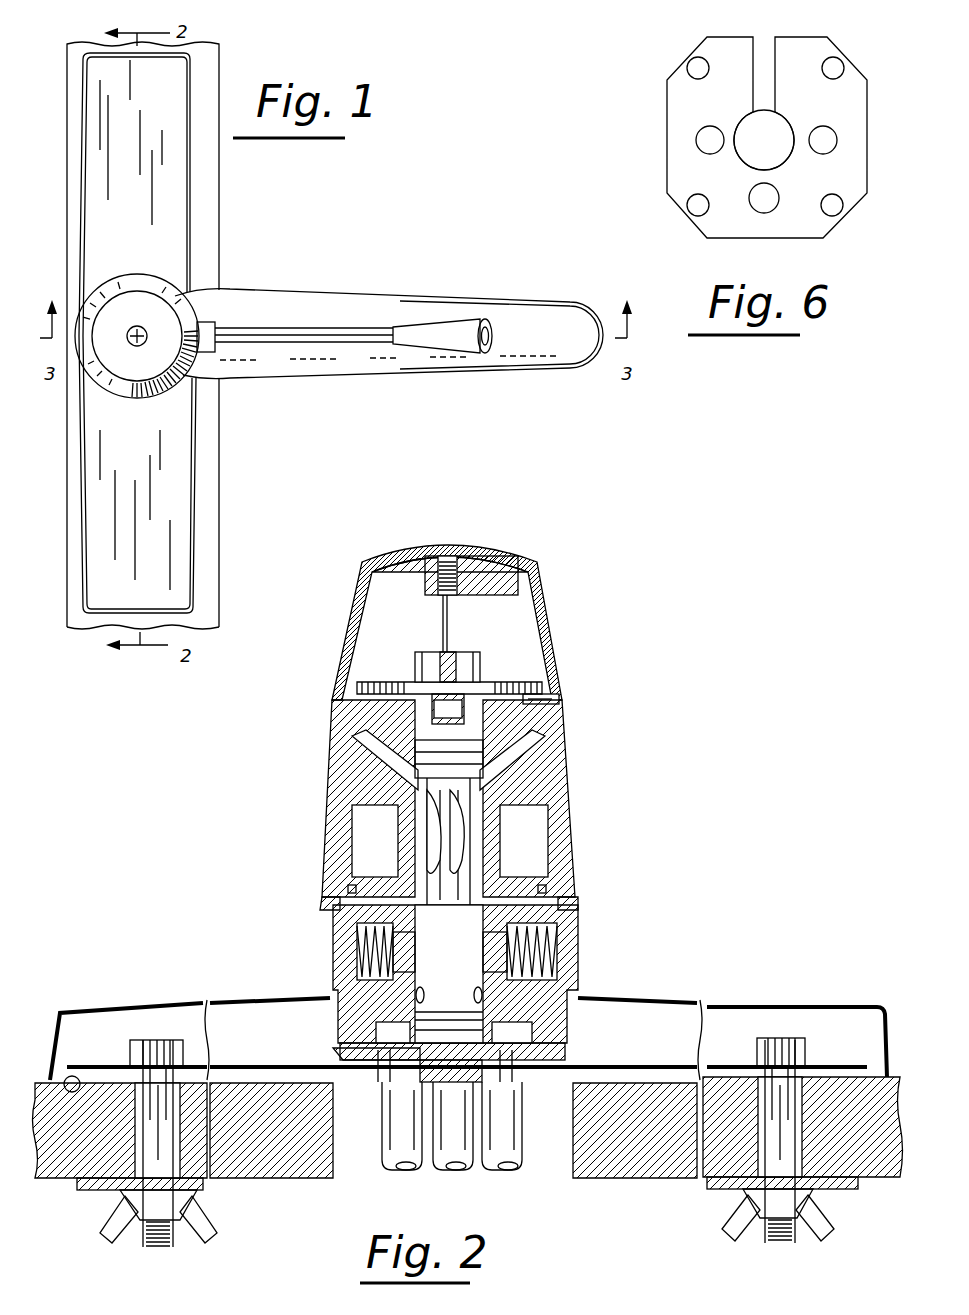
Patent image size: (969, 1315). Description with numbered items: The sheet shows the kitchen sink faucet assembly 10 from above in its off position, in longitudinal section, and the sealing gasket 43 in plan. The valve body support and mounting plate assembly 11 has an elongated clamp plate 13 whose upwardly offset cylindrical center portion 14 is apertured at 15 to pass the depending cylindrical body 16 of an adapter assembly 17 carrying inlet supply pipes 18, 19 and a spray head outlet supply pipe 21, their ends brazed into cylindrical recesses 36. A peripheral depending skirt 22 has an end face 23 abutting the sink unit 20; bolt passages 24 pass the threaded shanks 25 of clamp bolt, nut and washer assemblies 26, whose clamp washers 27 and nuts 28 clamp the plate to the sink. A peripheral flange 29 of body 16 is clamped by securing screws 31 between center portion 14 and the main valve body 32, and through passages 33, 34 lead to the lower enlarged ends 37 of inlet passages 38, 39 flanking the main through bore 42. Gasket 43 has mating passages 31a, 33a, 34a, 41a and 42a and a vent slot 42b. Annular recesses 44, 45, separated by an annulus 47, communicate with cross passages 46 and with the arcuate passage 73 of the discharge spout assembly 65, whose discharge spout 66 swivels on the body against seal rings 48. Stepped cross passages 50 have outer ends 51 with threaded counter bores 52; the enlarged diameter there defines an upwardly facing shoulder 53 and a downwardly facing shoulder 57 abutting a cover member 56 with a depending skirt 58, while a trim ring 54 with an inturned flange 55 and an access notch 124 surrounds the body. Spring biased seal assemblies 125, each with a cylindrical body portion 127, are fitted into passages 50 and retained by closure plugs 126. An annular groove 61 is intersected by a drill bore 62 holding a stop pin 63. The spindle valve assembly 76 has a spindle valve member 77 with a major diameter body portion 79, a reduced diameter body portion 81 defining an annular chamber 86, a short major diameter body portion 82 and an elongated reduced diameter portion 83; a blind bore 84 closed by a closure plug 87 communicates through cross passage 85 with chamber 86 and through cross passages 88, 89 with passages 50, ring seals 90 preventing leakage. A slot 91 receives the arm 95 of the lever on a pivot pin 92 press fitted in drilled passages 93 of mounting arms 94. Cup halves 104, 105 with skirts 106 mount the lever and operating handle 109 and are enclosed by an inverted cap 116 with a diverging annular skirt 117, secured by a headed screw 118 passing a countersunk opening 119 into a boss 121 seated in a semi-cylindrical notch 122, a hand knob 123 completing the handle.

In FIG. 1, the kitchen sink faucet assembly 10 is at (232, 272).
In FIG. 2, the kitchen sink faucet assembly 10 is at (574, 784).
In FIG. 2, the valve body support and mounting plate assembly 11 is at (810, 1044).
In FIG. 2, the clamp plate 13 is at (615, 1076).
In FIG. 2, the upwardly offset cylindrical center portion 14 is at (568, 1050).
In FIG. 2, the aperture 15 is at (499, 1130).
In FIG. 2, the depending cylindrical body 16 is at (610, 1054).
In FIG. 2, the adapter assembly 17 is at (496, 1066).
In FIG. 2, the inlet supply pipe 18 is at (382, 1160).
In FIG. 2, the inlet supply pipe 19 is at (522, 1136).
In FIG. 1, the sink unit 20 is at (218, 543).
In FIG. 2, the sink unit 20 is at (290, 1178).
In FIG. 2, the spray head outlet supply pipe 21 is at (450, 1172).
In FIG. 2, the peripheral depending skirt 22 is at (878, 1066).
In FIG. 2, the end face 23 is at (78, 1076).
In FIG. 2, the bolt passages 24 is at (146, 1092).
In FIG. 2, the threaded shanks 25 is at (469, 1143).
In FIG. 2, the clamp bolt, nut and washer assemblies 26 is at (130, 1048).
In FIG. 2, the clamp washers 27 is at (82, 1192).
In FIG. 2, the nuts 28 is at (206, 1222).
In FIG. 2, the peripheral flange 29 is at (362, 1068).
In FIG. 2, the securing screws 31 is at (380, 1078).
In FIG. 2, the main valve body 32 is at (572, 1018).
In FIG. 2, the through passage 33 is at (453, 1126).
In FIG. 2, the through passage 34 is at (478, 1090).
In FIG. 2, the cylindrical recesses 36 is at (384, 1130).
In FIG. 2, the lower enlarged ends 37 is at (376, 1038).
In FIG. 2, the inlet passage 38 is at (370, 1022).
In FIG. 2, the inlet passage 39 is at (578, 988).
In FIG. 2, the main through bore 42 is at (496, 866).
In FIG. 6, the sealing gasket 43 is at (660, 181).
In FIG. 2, the sealing gasket 43 is at (334, 1068).
In FIG. 2, the annular recess 44 is at (350, 846).
In FIG. 2, the annular recess 45 is at (352, 740).
In FIG. 2, the cross passages 46 is at (386, 753).
In FIG. 2, the annulus 47 is at (350, 800).
In FIG. 2, the seal rings 48 is at (338, 722).
In FIG. 2, the stepped cross passages 50 is at (360, 948).
In FIG. 2, the outer ends 51 is at (360, 980).
In FIG. 2, the threaded counter bores 52 is at (578, 926).
In FIG. 2, the upwardly facing shoulder 53 is at (322, 906).
In FIG. 2, the annular brass trim ring 54 is at (580, 918).
In FIG. 2, the inturned flange 55 is at (568, 900).
In FIG. 1, the cover member 56 is at (212, 213).
In FIG. 2, the cover member 56 is at (712, 1004).
In FIG. 2, the downwardly facing shoulder 57 is at (338, 1000).
In FIG. 2, the depending diverging peripheral skirt 58 is at (884, 1020).
In FIG. 2, the annular groove 61 is at (558, 702).
In FIG. 2, the pin receiving drill bore 62 is at (548, 674).
In FIG. 2, the stop pin 63 is at (562, 696).
In FIG. 1, the discharge spout assembly 65 is at (343, 378).
In FIG. 1, the discharge spout 66 is at (444, 374).
In FIG. 2, the arcuate passage 73 is at (548, 744).
In FIG. 2, the spindle valve assembly 76 is at (464, 862).
In FIG. 2, the spindle valve member 77 is at (440, 650).
In FIG. 2, the major diameter body portion 79 is at (440, 945).
In FIG. 2, the reduced diameter body portion 81 is at (448, 841).
In FIG. 2, the short major diameter body portion 82 is at (550, 738).
In FIG. 2, the elongated reduced diameter portion 83 is at (490, 690).
In FIG. 2, the blind bore 84 is at (470, 824).
In FIG. 2, the cross passage 85 is at (430, 840).
In FIG. 2, the annular chamber 86 is at (480, 842).
In FIG. 2, the closure plug 87 is at (430, 1030).
In FIG. 2, the cross passage 88 is at (422, 990).
In FIG. 2, the cross passage 89 is at (476, 994).
In FIG. 2, the ring seals 90 is at (449, 849).
In FIG. 2, the slot 91 is at (444, 650).
In FIG. 2, the pivot pin 92 is at (448, 650).
In FIG. 2, the drilled passages 93 is at (414, 658).
In FIG. 2, the mounting arms 94 is at (430, 650).
In FIG. 2, the arm 95 is at (464, 650).
In FIG. 2, the cup half 104 is at (546, 608).
In FIG. 2, the cup half 105 is at (348, 629).
In FIG. 2, the skirts 106 is at (342, 658).
In FIG. 1, the operating handle 109 is at (340, 326).
In FIG. 2, the operating handle 109 is at (564, 680).
In FIG. 1, the inverted cap 116 is at (132, 396).
In FIG. 2, the inverted cap 116 is at (508, 551).
In FIG. 1, the diverging annular skirt 117 is at (128, 274).
In FIG. 2, the diverging annular skirt 117 is at (352, 604).
In FIG. 1, the headed screw 118 is at (138, 326).
In FIG. 2, the headed screw 118 is at (452, 550).
In FIG. 2, the countersunk opening 119 is at (444, 550).
In FIG. 2, the depending cylindrical boss 121 is at (434, 556).
In FIG. 2, the semi-cylindrical notch 122 is at (430, 580).
In FIG. 1, the hand knob 123 is at (450, 326).
In FIG. 2, the access notch 124 is at (360, 932).
In FIG. 2, the spring biased seal assemblies 125 is at (360, 962).
In FIG. 2, the closure plugs 126 is at (355, 898).
In FIG. 2, the cylindrical body portion 127 is at (450, 948).
In FIG. 6, the through passage 31a is at (692, 65).
In FIG. 6, the through passage 33a is at (698, 139).
In FIG. 6, the through passage 34a is at (836, 136).
In FIG. 6, the through passage 41a is at (768, 212).
In FIG. 6, the through passage 42a is at (780, 154).
In FIG. 2, the through passage 42a is at (446, 1091).
In FIG. 6, the slot 42b is at (772, 34).
In FIG. 2, the slot 42b is at (451, 1069).